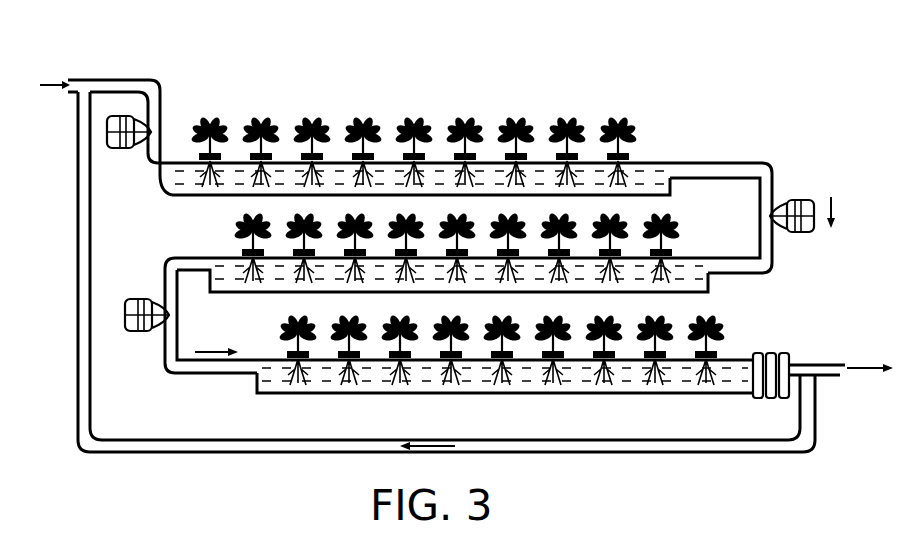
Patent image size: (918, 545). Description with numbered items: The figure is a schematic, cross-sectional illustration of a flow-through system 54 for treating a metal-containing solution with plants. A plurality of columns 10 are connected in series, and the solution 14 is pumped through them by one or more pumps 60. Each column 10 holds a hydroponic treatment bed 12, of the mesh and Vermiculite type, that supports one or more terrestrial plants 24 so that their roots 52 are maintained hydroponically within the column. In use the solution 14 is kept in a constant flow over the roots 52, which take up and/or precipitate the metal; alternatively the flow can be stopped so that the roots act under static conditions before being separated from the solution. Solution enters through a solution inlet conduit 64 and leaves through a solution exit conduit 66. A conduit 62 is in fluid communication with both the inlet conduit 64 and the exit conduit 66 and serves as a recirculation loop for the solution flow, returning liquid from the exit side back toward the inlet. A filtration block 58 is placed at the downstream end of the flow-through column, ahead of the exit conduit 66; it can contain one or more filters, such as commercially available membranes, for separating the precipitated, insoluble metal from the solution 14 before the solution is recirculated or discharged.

The column 10 is at (163, 180).
The hydroponic treatment bed 12 is at (652, 172).
The solution 14 is at (152, 90).
The terrestrial plant 24 is at (378, 127).
The roots 52 is at (193, 183).
The flow-through system 54 is at (536, 100).
The filtration block 58 is at (757, 398).
The pump 60 is at (800, 203).
The conduit 62 is at (590, 440).
The solution inlet conduit 64 is at (110, 78).
The solution exit conduit 66 is at (796, 362).